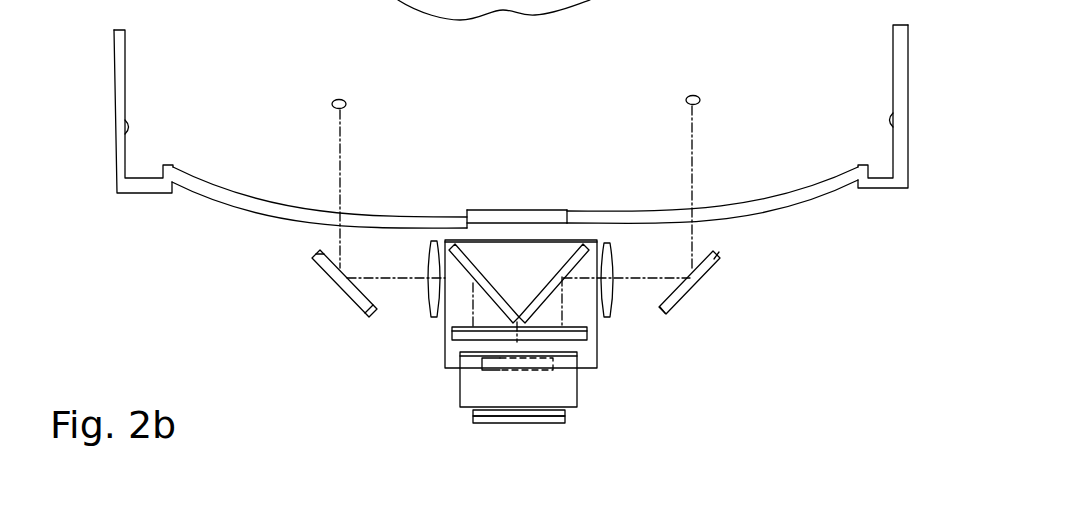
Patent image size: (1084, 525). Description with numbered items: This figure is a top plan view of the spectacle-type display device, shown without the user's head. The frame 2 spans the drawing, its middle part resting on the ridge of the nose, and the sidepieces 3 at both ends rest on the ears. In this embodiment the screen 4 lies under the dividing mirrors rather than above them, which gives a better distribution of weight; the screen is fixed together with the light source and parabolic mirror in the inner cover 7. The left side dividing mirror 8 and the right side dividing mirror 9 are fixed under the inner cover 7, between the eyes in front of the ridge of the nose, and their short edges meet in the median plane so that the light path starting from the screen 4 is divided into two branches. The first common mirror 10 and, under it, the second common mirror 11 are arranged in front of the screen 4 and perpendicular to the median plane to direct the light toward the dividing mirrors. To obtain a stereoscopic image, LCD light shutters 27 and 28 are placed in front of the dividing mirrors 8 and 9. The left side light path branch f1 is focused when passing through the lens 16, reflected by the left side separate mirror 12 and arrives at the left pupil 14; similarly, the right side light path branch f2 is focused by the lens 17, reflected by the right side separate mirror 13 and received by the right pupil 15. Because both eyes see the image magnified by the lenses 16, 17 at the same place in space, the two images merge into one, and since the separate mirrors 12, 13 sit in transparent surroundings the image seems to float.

The frame 2 is at (500, 210).
The sidepieces 3 is at (126, 62).
The screen 4 is at (493, 372).
The inner cover 7 is at (598, 347).
The left side dividing mirror 8 is at (455, 243).
The right side dividing mirror 9 is at (583, 243).
The first common mirror 10 is at (471, 421).
The second common mirror 11 is at (577, 391).
The left side separate mirror 12 is at (320, 269).
The right side separate mirror 13 is at (703, 282).
The left pupil 14 is at (330, 104).
The right pupil 15 is at (702, 97).
The lens 16 is at (427, 310).
The lens 17 is at (610, 308).
The LCD light shutter 27 is at (443, 340).
The LCD light shutter 28 is at (598, 332).
The left side light path branch f1 is at (338, 145).
The right side light path branch f2 is at (692, 133).